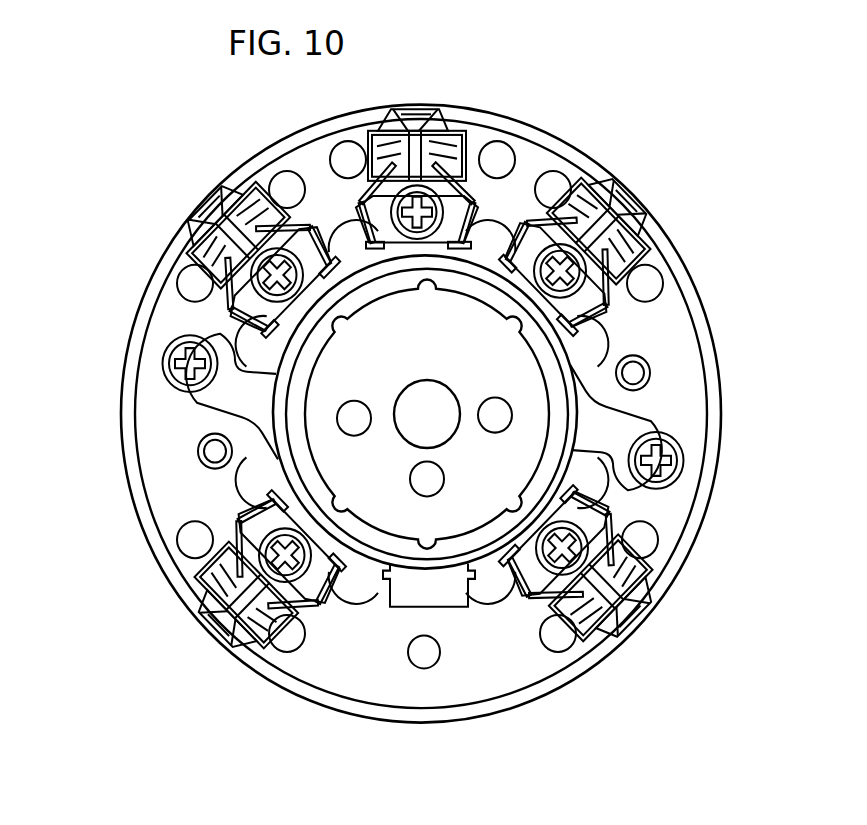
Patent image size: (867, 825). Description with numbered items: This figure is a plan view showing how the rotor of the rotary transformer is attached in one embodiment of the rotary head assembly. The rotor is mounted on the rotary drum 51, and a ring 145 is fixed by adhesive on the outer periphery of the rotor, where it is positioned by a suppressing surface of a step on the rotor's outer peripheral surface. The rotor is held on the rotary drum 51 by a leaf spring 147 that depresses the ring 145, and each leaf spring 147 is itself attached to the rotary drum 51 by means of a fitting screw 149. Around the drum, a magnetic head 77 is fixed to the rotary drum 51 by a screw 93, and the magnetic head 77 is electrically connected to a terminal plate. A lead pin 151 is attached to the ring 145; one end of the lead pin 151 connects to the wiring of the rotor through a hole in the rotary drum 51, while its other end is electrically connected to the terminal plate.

The rotary drum 51 is at (665, 295).
The magnetic head 77 is at (203, 625).
The screw 93 is at (293, 607).
The ring 145 is at (488, 237).
The leaf spring 147 is at (653, 422).
The fitting screw 149 is at (167, 380).
The lead pin 151 is at (232, 513).